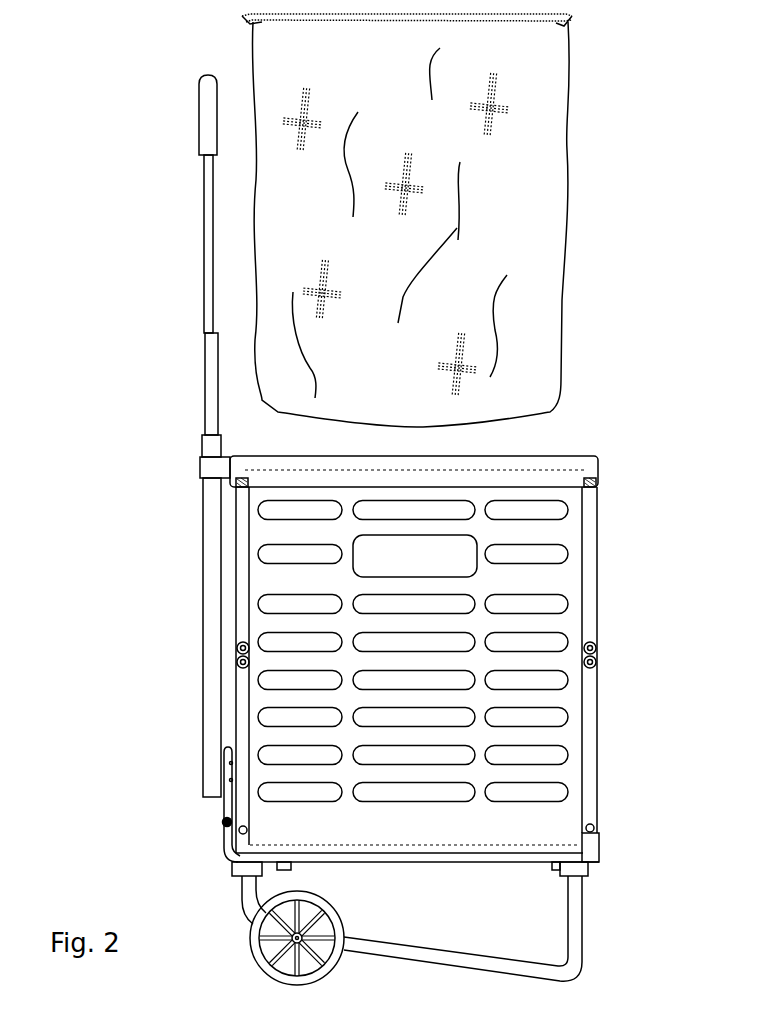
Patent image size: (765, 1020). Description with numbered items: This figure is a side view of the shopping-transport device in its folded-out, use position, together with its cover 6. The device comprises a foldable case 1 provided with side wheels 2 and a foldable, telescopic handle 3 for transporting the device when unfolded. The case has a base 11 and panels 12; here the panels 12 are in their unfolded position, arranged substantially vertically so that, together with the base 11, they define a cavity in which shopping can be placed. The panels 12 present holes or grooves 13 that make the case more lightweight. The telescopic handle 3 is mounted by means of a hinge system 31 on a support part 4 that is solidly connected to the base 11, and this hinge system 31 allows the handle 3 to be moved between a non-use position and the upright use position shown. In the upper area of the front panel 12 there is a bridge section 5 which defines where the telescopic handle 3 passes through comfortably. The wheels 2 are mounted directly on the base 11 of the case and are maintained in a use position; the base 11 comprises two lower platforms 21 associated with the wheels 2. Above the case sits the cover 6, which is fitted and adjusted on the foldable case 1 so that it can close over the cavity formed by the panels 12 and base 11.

The foldable case 1 is at (597, 608).
The wheels 2 is at (250, 952).
The telescopic handle 3 is at (214, 723).
The support part 4 is at (226, 845).
The bridge section 5 is at (205, 468).
The cover 6 is at (548, 238).
The base 11 is at (418, 857).
The panels 12 is at (278, 583).
The holes or grooves 13 is at (548, 752).
The lower platforms 21 is at (573, 947).
The hinge system 31 is at (224, 822).